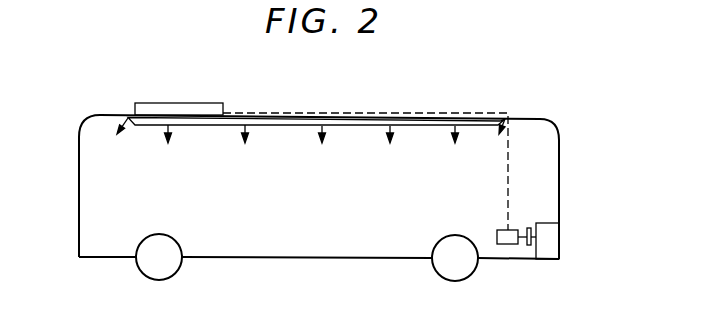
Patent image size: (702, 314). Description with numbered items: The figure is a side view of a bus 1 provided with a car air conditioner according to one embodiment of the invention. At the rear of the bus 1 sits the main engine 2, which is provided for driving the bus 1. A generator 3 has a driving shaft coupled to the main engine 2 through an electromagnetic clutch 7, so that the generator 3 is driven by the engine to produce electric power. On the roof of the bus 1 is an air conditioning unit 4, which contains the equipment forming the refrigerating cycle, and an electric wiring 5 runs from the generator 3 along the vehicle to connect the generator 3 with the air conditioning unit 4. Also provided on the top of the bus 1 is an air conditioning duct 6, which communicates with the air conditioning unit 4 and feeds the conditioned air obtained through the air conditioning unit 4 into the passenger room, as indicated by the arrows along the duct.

The bus 1 is at (102, 257).
The main engine 2 is at (554, 240).
The generator 3 is at (510, 244).
The air conditioning unit 4 is at (207, 102).
The electric wiring 5 is at (509, 158).
The air conditioning duct 6 is at (227, 125).
The electromagnetic clutch 7 is at (528, 245).